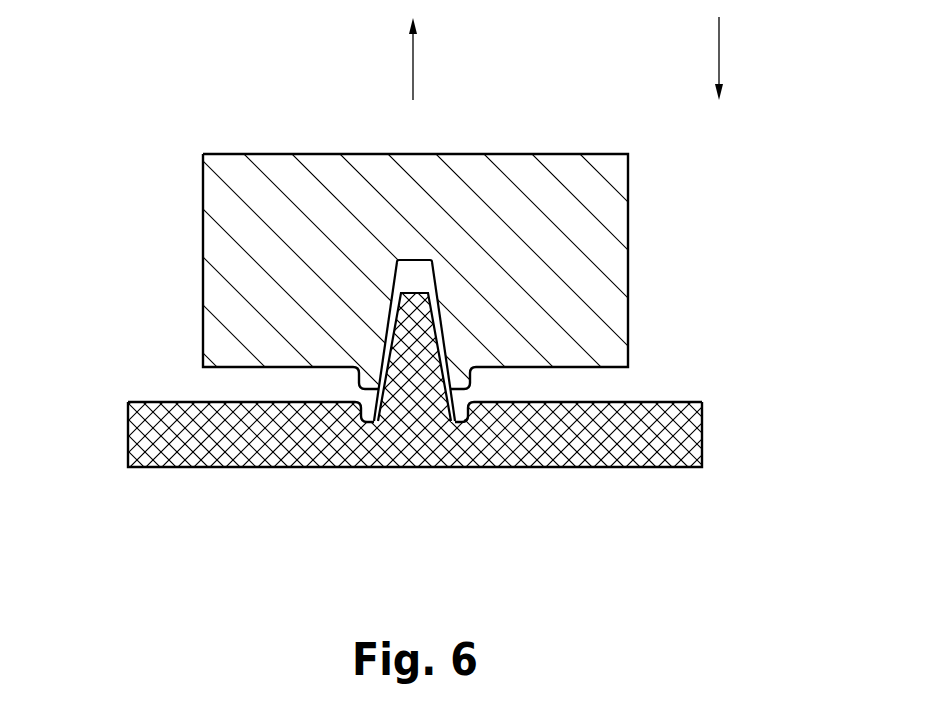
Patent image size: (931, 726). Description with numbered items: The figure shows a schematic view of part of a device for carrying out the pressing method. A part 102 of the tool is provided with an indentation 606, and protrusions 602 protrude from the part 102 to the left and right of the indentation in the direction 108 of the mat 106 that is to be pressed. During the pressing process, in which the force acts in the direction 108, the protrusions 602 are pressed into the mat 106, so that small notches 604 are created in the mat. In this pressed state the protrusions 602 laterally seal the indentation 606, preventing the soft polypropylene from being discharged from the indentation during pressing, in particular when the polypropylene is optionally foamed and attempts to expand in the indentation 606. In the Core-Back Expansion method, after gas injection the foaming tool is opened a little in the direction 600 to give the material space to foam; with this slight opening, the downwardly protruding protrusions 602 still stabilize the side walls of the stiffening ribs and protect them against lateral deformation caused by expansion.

The part 102 is at (593, 278).
The mat 106 is at (155, 438).
The direction 108 is at (719, 48).
The direction 600 is at (413, 72).
The protrusions 602 is at (470, 378).
The notches 604 is at (465, 428).
The indentation 606 is at (417, 273).